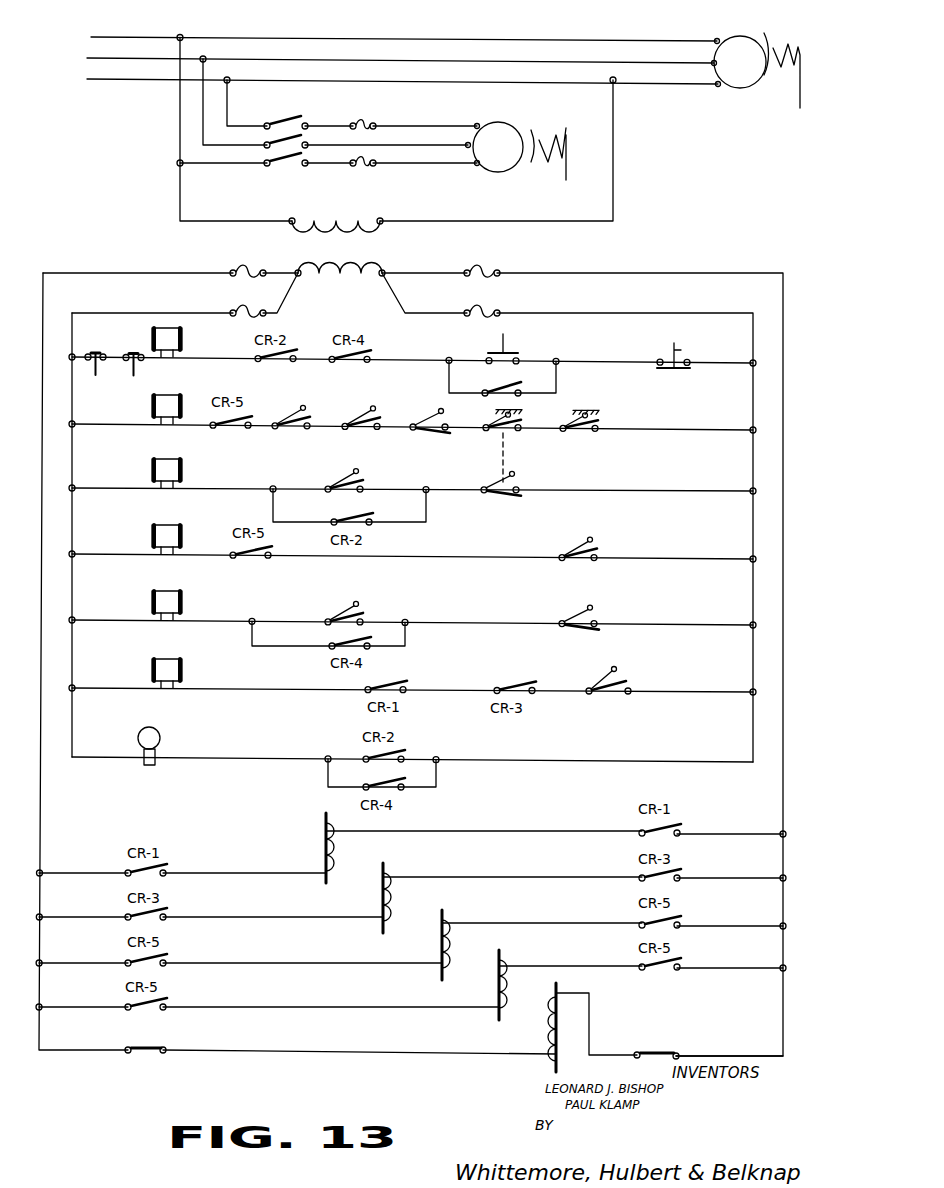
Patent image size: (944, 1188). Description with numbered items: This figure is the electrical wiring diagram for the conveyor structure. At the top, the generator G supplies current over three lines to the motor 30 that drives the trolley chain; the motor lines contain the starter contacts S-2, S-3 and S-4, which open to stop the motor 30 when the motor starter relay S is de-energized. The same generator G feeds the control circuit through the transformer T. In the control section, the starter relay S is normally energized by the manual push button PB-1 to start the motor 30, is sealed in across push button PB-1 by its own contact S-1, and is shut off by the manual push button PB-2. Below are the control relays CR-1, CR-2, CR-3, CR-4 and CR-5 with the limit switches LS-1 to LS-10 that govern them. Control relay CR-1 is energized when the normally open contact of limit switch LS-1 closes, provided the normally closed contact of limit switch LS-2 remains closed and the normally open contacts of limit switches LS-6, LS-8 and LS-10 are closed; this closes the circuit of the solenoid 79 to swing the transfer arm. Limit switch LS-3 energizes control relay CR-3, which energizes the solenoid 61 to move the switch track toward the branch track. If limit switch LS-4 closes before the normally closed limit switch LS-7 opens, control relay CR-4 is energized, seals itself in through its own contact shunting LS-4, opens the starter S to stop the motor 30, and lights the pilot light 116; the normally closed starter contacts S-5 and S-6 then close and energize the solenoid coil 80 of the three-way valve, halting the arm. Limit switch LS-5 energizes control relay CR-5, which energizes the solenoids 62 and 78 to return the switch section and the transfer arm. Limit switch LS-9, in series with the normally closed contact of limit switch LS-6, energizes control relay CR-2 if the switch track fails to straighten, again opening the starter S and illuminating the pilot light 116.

The motor 30 is at (508, 145).
The generator G is at (742, 90).
The transformer T is at (372, 263).
The motor starter relay S is at (183, 340).
The starter contact S-1 is at (502, 378).
The starter contact S-2 is at (285, 122).
The starter contact S-3 is at (272, 142).
The starter contact S-4 is at (284, 166).
The normally closed starter contact S-5 is at (141, 1045).
The normally closed starter contact S-6 is at (655, 1050).
The manual push button PB-1 is at (504, 342).
The manual push button PB-2 is at (696, 355).
The control relay CR-1 is at (152, 401).
The control relay CR-2 is at (152, 465).
The control relay CR-3 is at (152, 531).
The control relay CR-4 is at (152, 597).
The control relay CR-5 is at (152, 665).
The limit switch LS-1 is at (364, 415).
The limit switch LS-2 is at (431, 421).
The limit switch LS-3 is at (578, 549).
The limit switch LS-4 is at (345, 610).
The limit switch LS-5 is at (608, 682).
The limit switch LS-6 is at (536, 413).
The limit switch LS-7 is at (579, 619).
The limit switch LS-8 is at (293, 414).
The limit switch LS-9 is at (345, 479).
The limit switch LS-10 is at (586, 421).
The pilot light 116 is at (161, 741).
The solenoid 79 is at (337, 863).
The solenoid 61 is at (394, 898).
The solenoid 62 is at (452, 962).
The solenoid 78 is at (510, 1000).
The solenoid coil 80 is at (547, 1023).